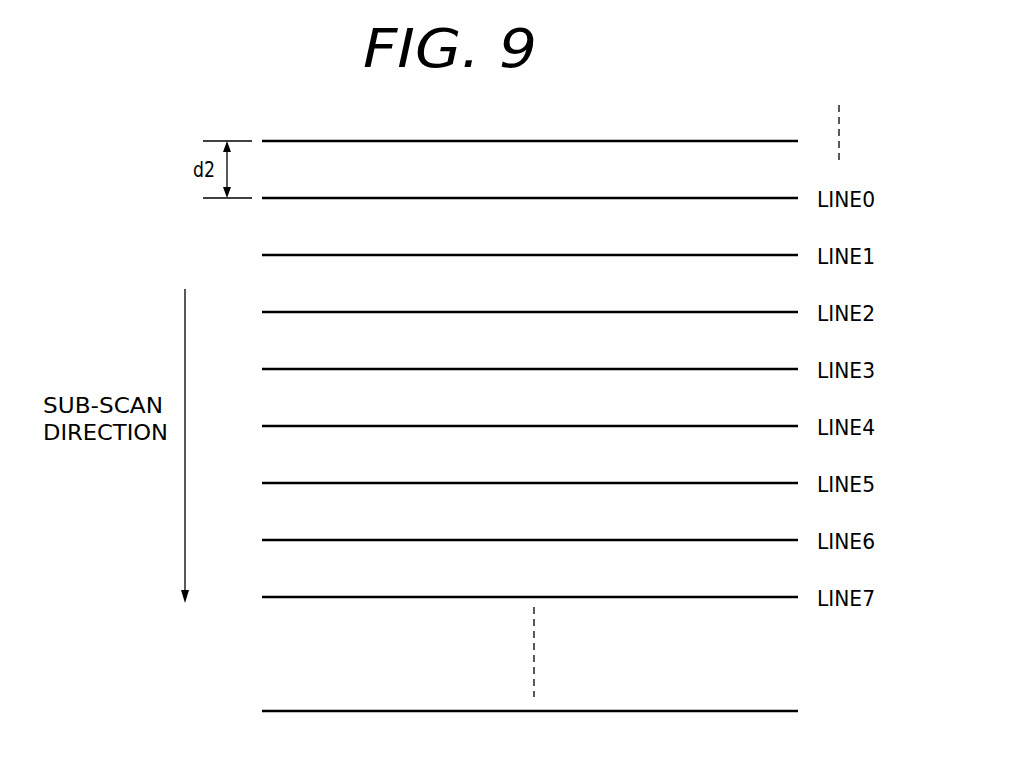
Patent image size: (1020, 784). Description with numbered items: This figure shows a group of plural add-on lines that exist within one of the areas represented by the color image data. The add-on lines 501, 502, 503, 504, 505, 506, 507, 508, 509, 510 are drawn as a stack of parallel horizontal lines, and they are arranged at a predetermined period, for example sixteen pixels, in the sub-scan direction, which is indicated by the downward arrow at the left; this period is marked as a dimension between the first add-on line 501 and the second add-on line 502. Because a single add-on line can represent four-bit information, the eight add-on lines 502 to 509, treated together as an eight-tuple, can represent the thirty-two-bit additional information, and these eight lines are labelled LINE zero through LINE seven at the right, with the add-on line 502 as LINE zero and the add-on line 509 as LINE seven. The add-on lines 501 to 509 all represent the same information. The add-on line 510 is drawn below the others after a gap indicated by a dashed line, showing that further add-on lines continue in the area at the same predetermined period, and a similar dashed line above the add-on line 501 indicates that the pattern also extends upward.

The add-on line 501 is at (625, 136).
The add-on line 502 is at (625, 193).
The add-on line 503 is at (625, 250).
The add-on line 504 is at (625, 307).
The add-on line 505 is at (625, 364).
The add-on line 506 is at (625, 421).
The add-on line 507 is at (625, 478).
The add-on line 508 is at (625, 535).
The add-on line 509 is at (625, 592).
The add-on line 510 is at (625, 706).